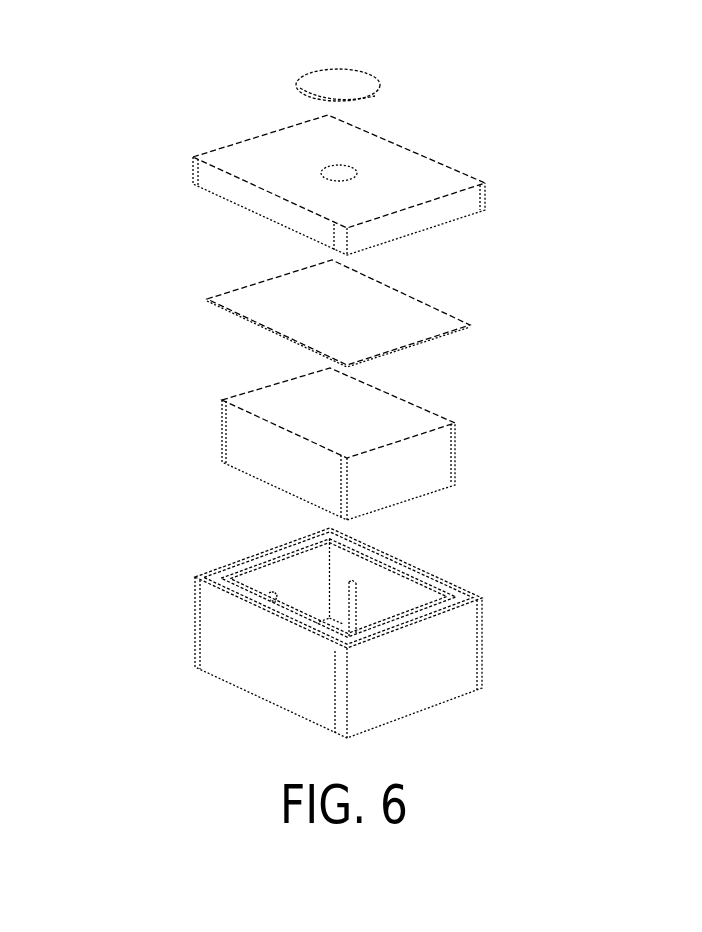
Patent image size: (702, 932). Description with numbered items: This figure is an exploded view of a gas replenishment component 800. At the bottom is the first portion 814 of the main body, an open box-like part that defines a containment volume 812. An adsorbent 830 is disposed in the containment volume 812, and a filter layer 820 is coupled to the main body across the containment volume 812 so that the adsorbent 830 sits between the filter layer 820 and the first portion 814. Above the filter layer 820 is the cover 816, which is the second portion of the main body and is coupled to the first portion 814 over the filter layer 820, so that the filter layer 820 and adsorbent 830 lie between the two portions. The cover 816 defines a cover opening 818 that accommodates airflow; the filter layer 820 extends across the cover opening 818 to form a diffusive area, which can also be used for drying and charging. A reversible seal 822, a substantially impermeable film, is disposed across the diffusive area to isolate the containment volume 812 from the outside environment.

The gas replenishment component 800 is at (126, 124).
The containment volume 812 is at (392, 600).
The first portion of the main body 814 is at (477, 645).
The cover 816 is at (447, 177).
The cover opening 818 is at (341, 165).
The filter layer 820 is at (437, 308).
The reversible seal 822 is at (365, 82).
The adsorbent 830 is at (447, 457).